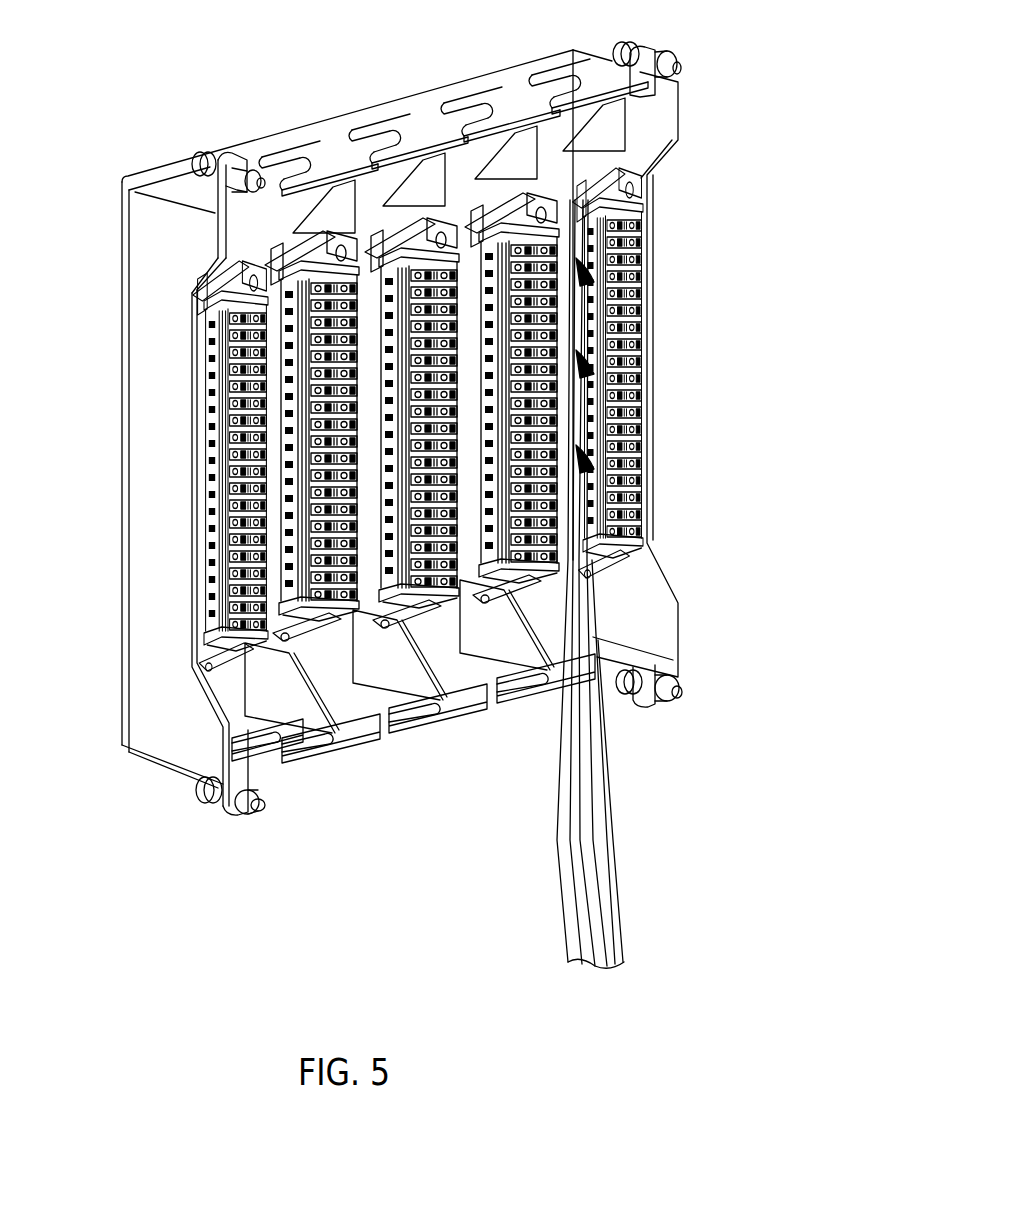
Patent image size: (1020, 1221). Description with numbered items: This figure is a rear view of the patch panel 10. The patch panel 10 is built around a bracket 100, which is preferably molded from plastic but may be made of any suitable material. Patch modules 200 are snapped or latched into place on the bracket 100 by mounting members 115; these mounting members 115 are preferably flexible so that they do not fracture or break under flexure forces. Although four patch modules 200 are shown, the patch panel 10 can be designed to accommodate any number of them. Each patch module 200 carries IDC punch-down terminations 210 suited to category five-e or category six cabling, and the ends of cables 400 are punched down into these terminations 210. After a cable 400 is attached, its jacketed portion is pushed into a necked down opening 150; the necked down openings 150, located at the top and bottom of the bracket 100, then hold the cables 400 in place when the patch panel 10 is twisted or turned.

The patch panel 10 is at (311, 52).
The bracket 100 is at (287, 143).
The mounting members 115 is at (207, 302).
The necked down opening 150 is at (552, 95).
The patch modules 200 is at (565, 201).
The IDC punch-down terminations 210 is at (648, 228).
The cables 400 is at (612, 862).